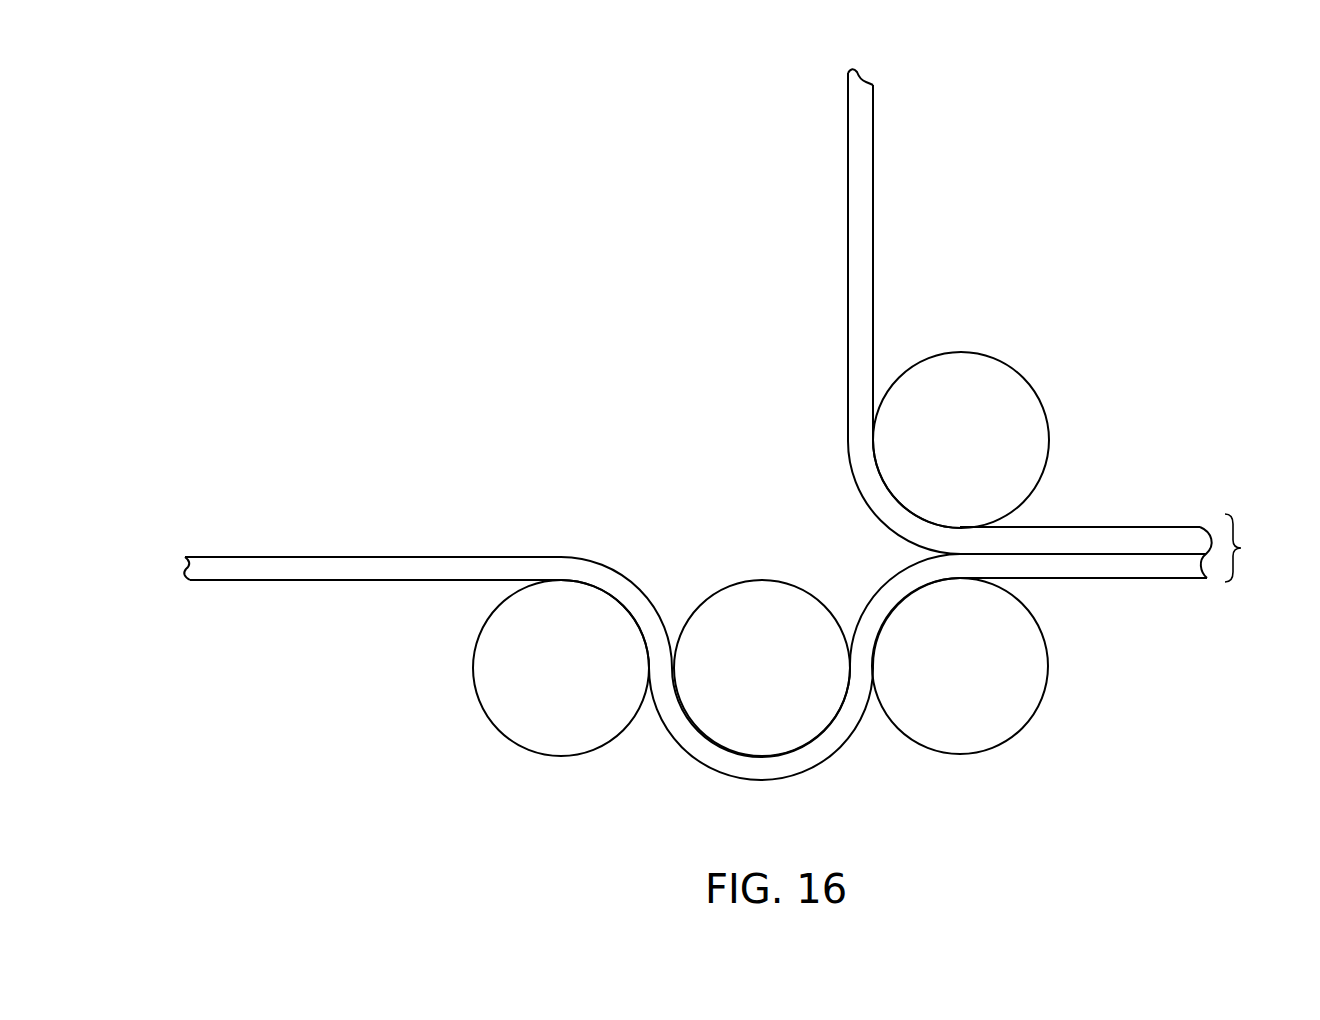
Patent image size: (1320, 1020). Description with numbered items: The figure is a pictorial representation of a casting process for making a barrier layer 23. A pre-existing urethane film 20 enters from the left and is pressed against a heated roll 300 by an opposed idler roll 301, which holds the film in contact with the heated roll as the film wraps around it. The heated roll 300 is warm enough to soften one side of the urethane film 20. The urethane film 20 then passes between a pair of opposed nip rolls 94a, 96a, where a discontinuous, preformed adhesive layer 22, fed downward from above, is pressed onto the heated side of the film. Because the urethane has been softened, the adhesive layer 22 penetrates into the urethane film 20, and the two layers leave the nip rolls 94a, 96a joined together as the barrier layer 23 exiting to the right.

The urethane film 20 is at (343, 556).
The adhesive layer 22 is at (873, 240).
The barrier layer 23 is at (1125, 548).
The heated roll 300 is at (760, 580).
The idler roll 301 is at (558, 756).
The nip roll 94a is at (1011, 368).
The nip roll 96a is at (1017, 733).